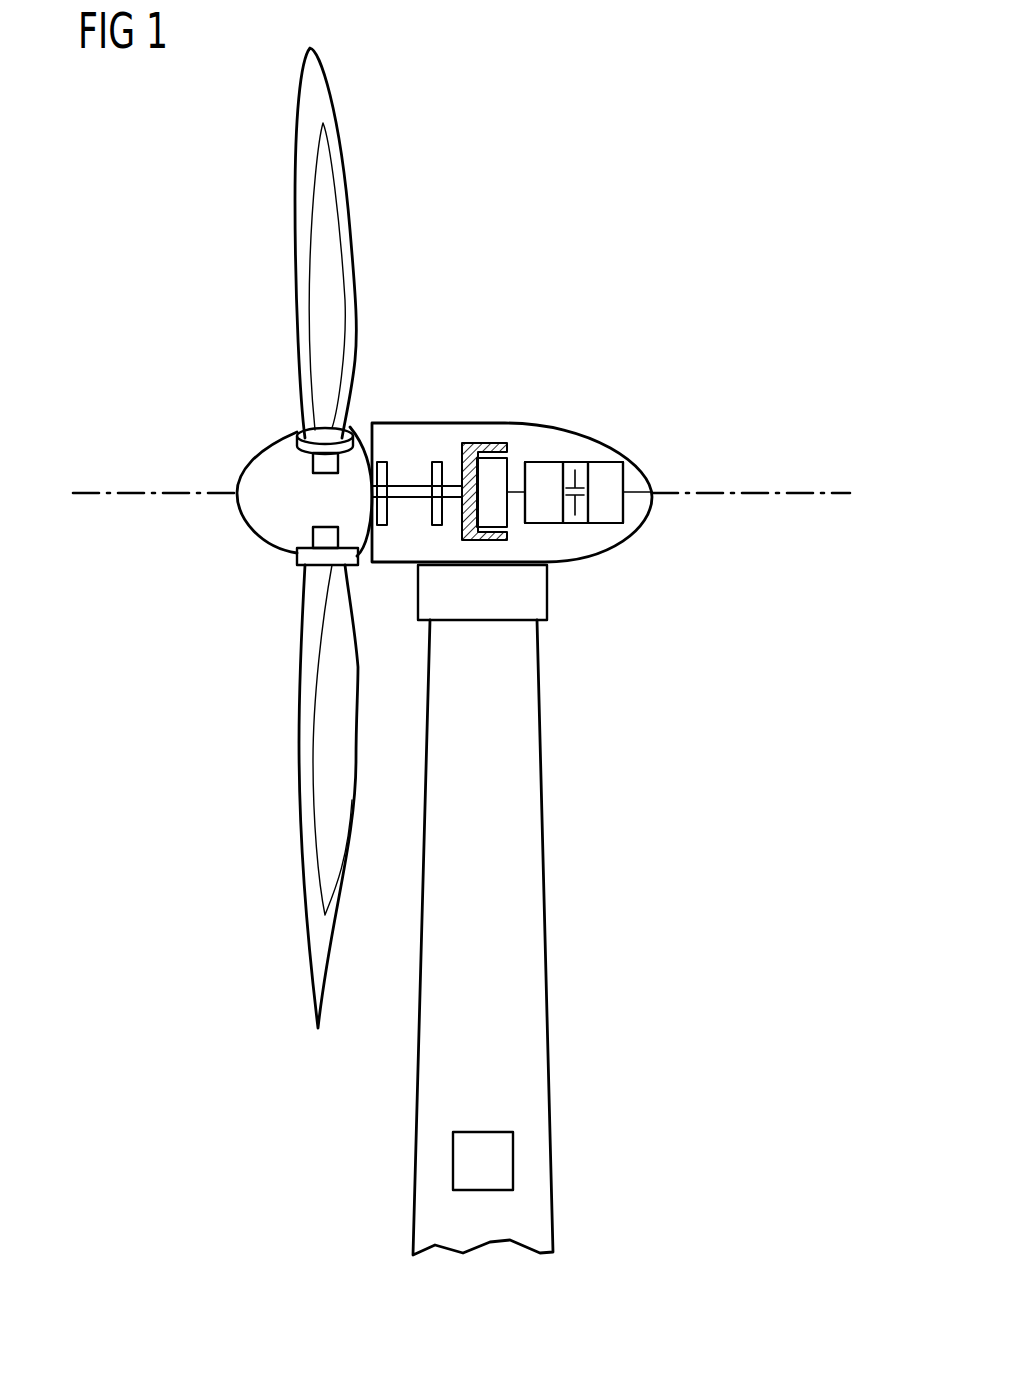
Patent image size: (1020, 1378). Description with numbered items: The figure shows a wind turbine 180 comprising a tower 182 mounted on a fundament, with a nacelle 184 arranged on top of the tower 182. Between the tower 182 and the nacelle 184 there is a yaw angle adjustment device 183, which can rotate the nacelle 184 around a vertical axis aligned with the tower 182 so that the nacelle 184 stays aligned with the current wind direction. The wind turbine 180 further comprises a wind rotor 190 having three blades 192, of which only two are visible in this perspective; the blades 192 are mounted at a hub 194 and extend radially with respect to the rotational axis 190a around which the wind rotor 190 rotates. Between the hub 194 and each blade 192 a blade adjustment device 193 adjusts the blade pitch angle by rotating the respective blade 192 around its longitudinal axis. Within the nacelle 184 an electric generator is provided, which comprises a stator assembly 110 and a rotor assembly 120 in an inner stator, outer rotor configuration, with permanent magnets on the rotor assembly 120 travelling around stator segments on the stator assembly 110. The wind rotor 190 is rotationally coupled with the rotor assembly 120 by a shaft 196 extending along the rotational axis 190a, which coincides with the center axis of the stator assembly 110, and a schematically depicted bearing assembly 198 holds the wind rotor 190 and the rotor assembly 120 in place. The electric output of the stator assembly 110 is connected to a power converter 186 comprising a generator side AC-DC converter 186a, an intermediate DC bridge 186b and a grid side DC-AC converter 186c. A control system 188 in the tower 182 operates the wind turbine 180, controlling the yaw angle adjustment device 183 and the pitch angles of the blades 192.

The wind turbine 180 is at (736, 254).
The tower 182 is at (535, 778).
The yaw angle adjustment device 183 is at (427, 592).
The nacelle 184 is at (653, 518).
The power converter 186 is at (590, 440).
The generator side AC-DC converter 186a is at (548, 525).
The intermediate DC bridge 186b is at (575, 525).
The grid side DC-AC converter 186c is at (608, 525).
The control system 188 is at (480, 1130).
The wind rotor 190 is at (195, 388).
The rotational axis 190a is at (93, 493).
The blades 192 is at (300, 232).
The blade adjustment device 193 is at (297, 430).
The hub 194 is at (253, 515).
The shaft 196 is at (415, 495).
The bearing assembly 198 is at (437, 462).
The stator assembly 110 is at (488, 443).
The rotor assembly 120 is at (508, 465).